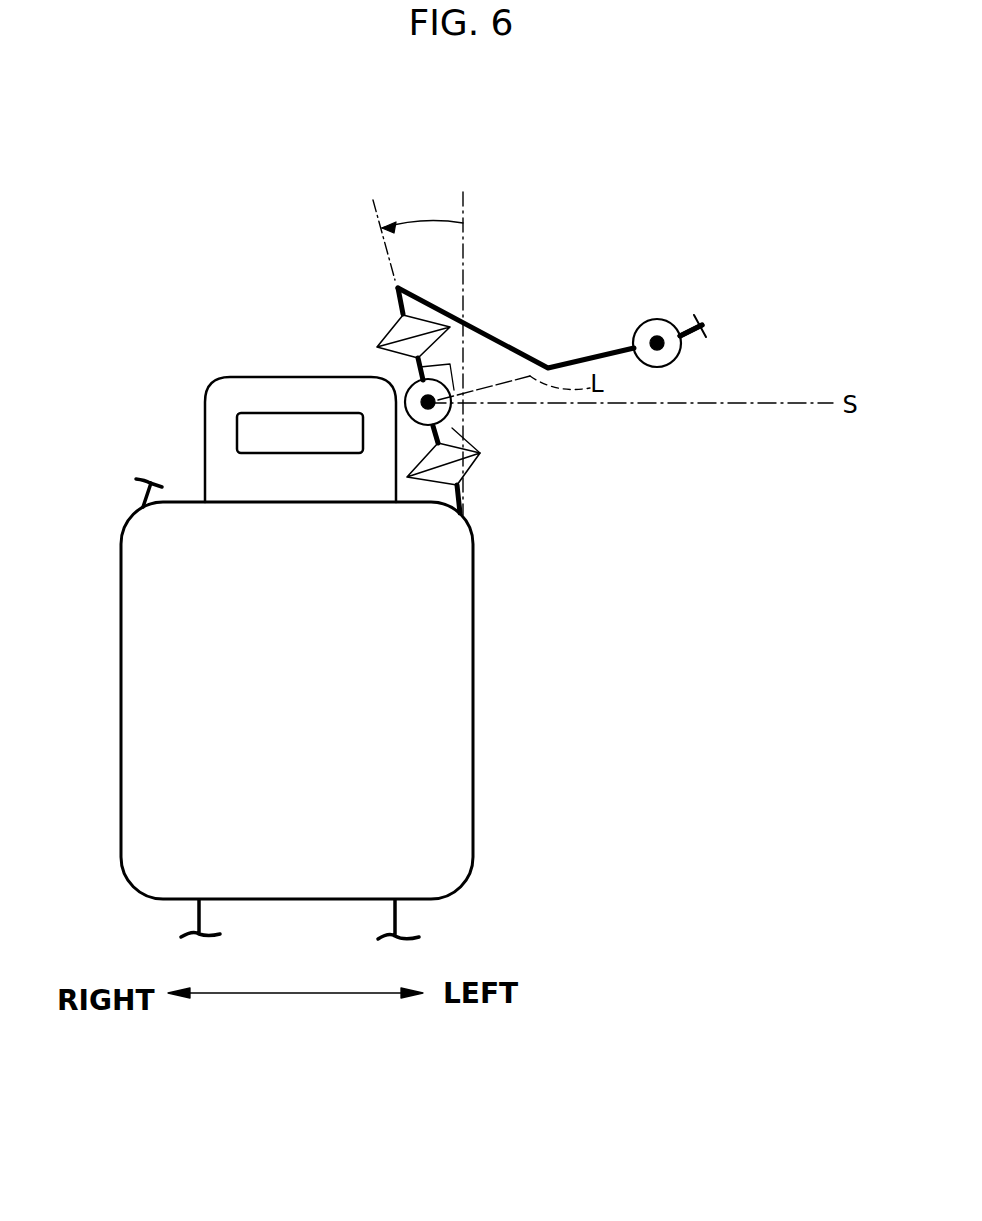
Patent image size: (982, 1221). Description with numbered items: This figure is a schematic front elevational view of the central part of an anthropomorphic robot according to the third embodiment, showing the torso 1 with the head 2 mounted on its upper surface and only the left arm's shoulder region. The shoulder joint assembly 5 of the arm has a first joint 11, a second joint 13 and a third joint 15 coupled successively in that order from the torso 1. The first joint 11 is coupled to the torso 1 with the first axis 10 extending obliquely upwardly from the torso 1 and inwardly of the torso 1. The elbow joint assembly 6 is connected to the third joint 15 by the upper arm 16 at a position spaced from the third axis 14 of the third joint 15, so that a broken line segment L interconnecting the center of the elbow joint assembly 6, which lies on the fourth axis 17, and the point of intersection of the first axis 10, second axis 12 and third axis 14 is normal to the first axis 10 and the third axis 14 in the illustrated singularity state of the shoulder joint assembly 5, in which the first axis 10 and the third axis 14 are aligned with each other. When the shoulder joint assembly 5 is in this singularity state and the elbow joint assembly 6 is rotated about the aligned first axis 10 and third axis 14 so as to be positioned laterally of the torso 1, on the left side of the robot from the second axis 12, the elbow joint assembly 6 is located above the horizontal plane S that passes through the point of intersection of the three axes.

The torso 1 is at (474, 684).
The head 2 is at (205, 425).
The shoulder joint assembly 5 is at (490, 413).
The elbow joint assembly 6 is at (678, 355).
The first axis 10 is at (460, 497).
The first joint 11 is at (467, 448).
The second axis 12 is at (422, 400).
The second joint 13 is at (407, 383).
The third axis 14 is at (407, 365).
The third joint 15 is at (397, 322).
The upper arm 16 is at (500, 338).
The fourth axis 17 is at (657, 335).